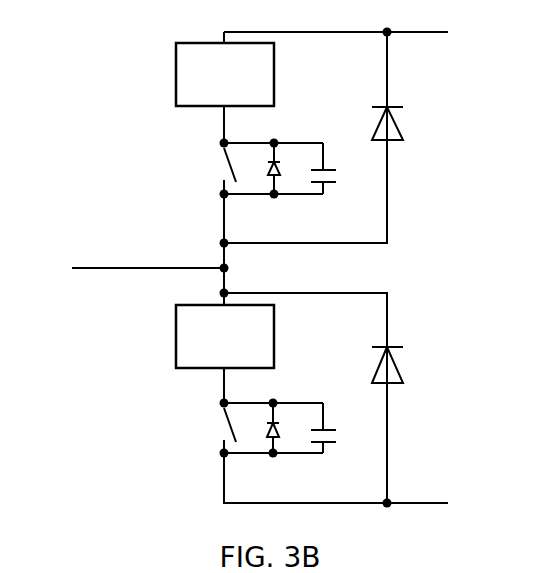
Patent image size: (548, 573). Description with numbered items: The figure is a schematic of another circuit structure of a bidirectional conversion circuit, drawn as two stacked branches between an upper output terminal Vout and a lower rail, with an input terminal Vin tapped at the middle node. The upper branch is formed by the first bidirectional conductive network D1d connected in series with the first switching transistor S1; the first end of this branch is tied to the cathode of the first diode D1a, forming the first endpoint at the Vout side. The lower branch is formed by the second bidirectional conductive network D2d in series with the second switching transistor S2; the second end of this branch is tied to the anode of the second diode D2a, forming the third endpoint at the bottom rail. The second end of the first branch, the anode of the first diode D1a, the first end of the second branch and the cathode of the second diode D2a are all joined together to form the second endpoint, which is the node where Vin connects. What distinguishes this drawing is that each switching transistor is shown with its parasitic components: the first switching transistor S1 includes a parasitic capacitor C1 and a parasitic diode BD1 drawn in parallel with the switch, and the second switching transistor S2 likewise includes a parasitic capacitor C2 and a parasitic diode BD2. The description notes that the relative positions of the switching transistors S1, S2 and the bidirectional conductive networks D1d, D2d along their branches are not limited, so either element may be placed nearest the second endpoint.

The output voltage terminal Vout is at (366, 49).
The input voltage terminal Vin is at (126, 263).
The first bidirectional conductive network D1d is at (225, 87).
The second bidirectional conductive network D2d is at (225, 354).
The first switching transistor S1 is at (200, 169).
The second switching transistor S2 is at (193, 428).
The parasitic diode BD1 is at (273, 186).
The parasitic diode BD2 is at (273, 442).
The parasitic capacitor C1 is at (327, 188).
The parasitic capacitor C2 is at (326, 443).
The first diode D1a is at (345, 137).
The second diode D2a is at (347, 398).